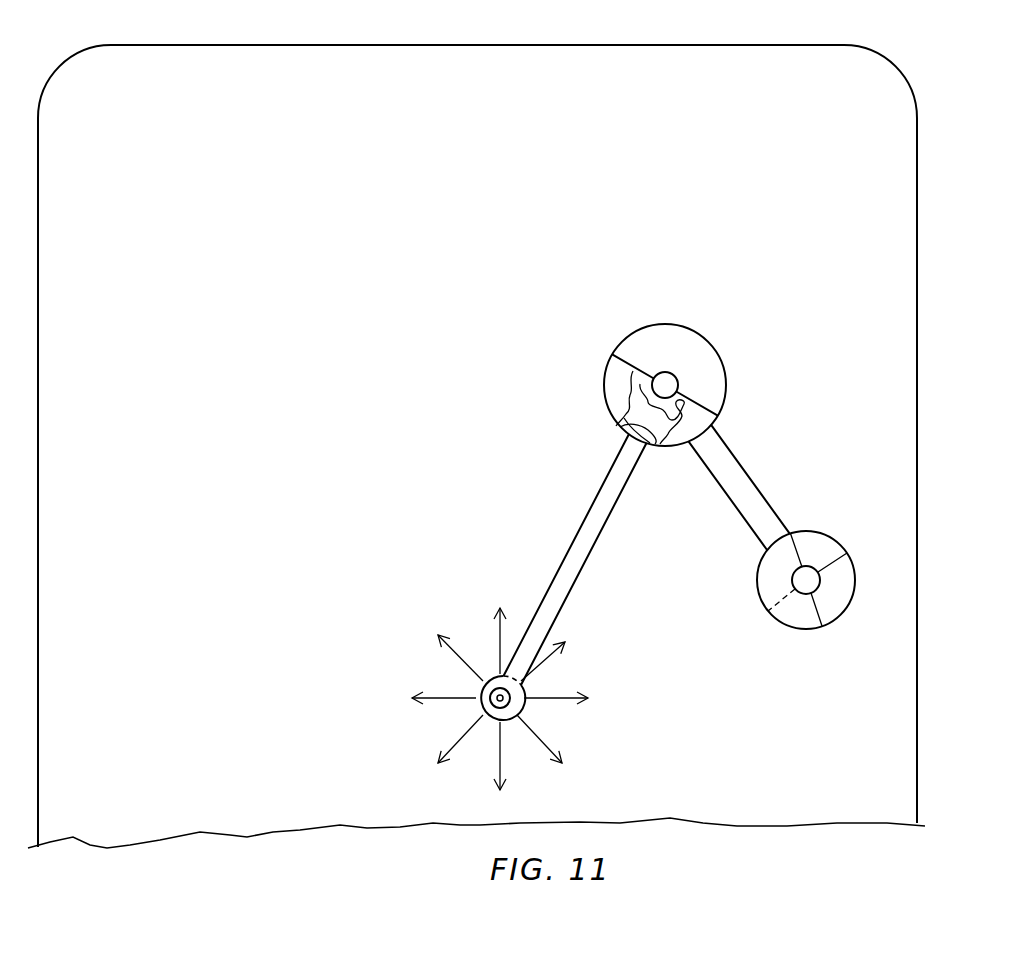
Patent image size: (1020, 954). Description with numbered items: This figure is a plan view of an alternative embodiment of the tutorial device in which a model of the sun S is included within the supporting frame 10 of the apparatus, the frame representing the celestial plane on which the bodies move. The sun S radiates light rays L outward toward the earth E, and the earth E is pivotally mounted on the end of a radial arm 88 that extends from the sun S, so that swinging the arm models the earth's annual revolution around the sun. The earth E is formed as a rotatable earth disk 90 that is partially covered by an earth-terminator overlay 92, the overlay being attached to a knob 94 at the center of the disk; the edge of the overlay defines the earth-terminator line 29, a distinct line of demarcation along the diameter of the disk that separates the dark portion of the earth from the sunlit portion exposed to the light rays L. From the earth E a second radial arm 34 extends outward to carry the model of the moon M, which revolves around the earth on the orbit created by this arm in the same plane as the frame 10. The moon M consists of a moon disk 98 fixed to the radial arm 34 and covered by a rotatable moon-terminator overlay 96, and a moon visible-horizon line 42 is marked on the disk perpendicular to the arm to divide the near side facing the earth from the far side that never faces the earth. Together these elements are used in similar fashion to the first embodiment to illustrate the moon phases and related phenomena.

The frame 10 is at (220, 0).
The earth-terminator line 29 is at (695, 402).
The radial arm 34 is at (753, 493).
The moon visible-horizon line 42 is at (825, 572).
The radial arm 88 is at (578, 575).
The earth disk 90 is at (603, 387).
The earth-terminator overlay 92 is at (650, 342).
The knob 94 is at (670, 383).
The moon-terminator overlay 96 is at (777, 583).
The moon disk 98 is at (847, 610).
The earth E is at (733, 353).
The moon M is at (850, 537).
The sun S is at (520, 708).
The light rays L is at (560, 702).